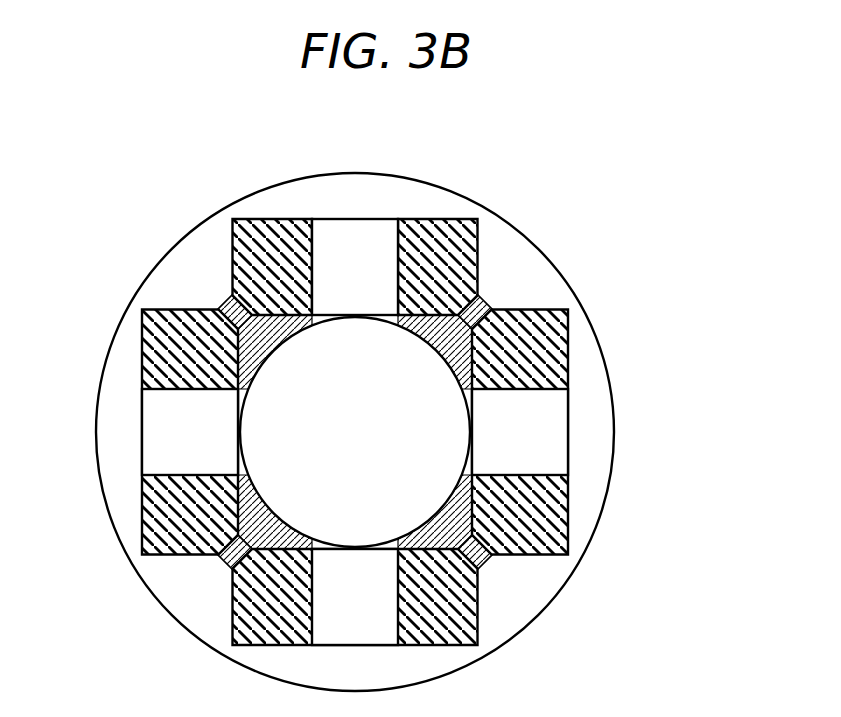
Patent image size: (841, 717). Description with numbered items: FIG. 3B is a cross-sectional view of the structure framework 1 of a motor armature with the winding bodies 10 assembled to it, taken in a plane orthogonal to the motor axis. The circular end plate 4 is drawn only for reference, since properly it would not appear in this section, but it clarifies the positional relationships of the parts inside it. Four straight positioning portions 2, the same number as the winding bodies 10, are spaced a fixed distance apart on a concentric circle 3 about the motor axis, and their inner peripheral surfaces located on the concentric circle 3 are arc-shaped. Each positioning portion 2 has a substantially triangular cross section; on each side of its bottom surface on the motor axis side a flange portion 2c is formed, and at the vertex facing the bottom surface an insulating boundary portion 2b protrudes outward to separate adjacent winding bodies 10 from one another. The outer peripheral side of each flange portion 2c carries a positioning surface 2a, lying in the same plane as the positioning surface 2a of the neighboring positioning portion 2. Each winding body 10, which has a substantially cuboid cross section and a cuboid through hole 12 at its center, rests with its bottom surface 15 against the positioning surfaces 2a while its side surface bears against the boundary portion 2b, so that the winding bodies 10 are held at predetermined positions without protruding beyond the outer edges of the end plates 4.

The structure framework 1 is at (568, 208).
The positioning portion 2 is at (237, 332).
The positioning surface 2a is at (408, 327).
The boundary portion 2b is at (224, 298).
The flange portion 2c is at (300, 318).
The concentric circle 3 is at (473, 395).
The end plate 4 is at (468, 197).
The winding body 10 is at (450, 262).
The through hole 12 is at (357, 256).
The bottom surface 15 is at (272, 309).